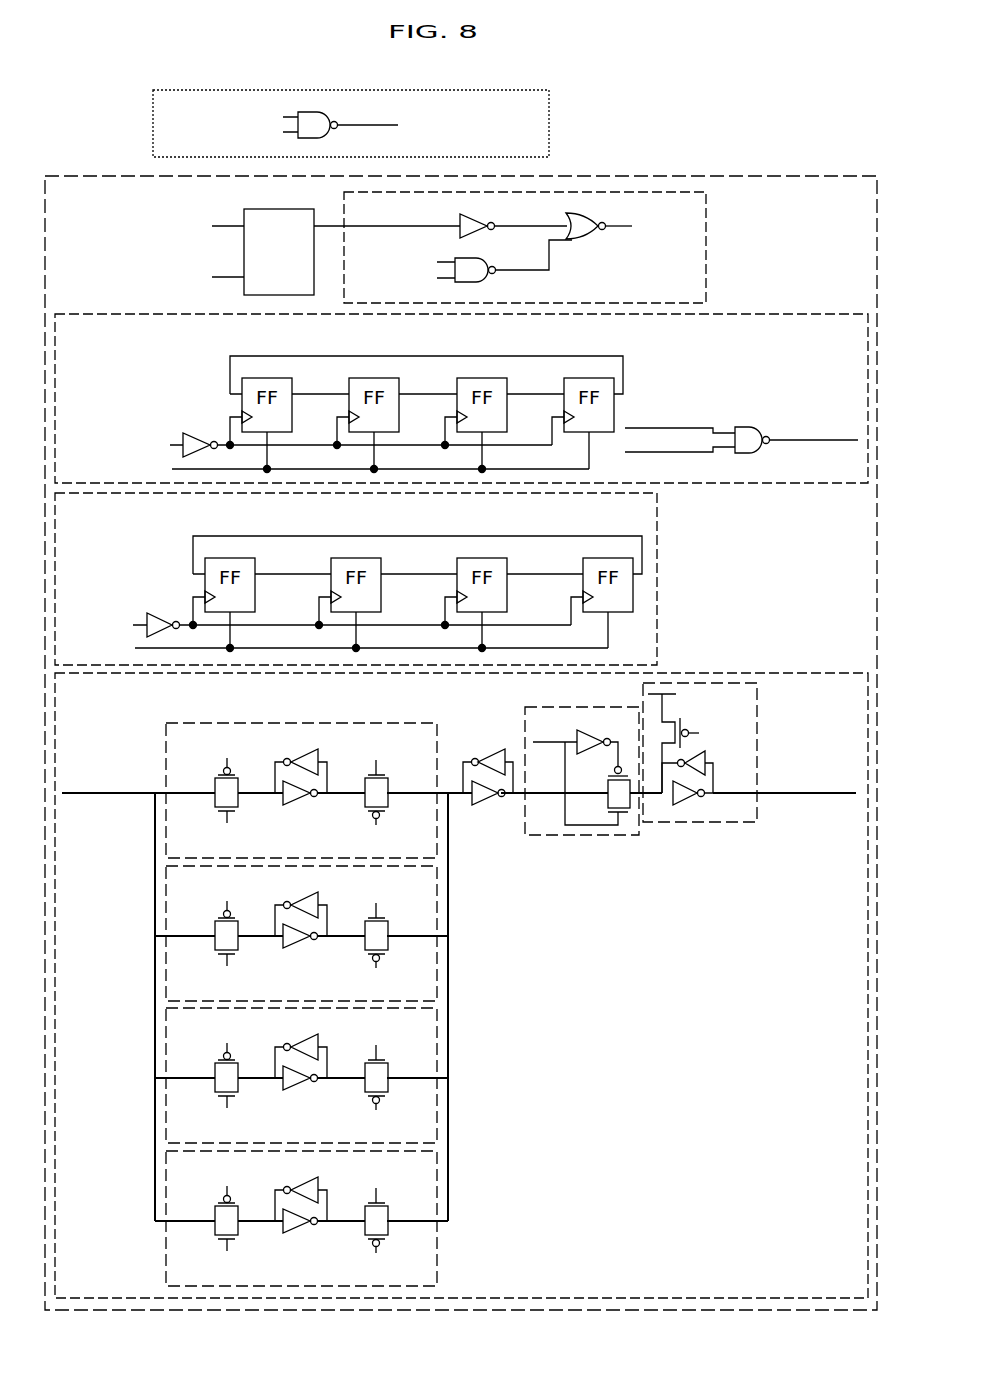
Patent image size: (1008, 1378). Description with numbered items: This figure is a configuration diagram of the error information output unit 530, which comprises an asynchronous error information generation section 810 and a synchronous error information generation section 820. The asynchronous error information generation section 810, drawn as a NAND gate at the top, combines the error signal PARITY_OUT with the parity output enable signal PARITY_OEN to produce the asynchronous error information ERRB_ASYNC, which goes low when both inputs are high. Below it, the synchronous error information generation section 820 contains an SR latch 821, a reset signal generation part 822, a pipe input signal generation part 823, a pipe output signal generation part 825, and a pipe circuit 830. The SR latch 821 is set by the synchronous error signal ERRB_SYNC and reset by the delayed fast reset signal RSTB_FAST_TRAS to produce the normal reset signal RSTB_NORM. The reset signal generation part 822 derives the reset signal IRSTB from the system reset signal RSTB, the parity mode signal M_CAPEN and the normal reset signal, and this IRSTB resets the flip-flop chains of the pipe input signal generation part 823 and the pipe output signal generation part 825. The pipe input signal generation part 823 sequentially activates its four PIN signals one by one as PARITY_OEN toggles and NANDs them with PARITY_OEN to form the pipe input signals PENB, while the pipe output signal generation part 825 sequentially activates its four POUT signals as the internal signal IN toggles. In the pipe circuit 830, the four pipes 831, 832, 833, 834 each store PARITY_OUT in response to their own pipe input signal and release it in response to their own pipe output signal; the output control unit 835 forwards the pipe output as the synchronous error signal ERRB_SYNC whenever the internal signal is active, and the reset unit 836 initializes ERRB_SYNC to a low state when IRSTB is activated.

The error information output unit 530 is at (683, 107).
The asynchronous error information generation section 810 is at (492, 92).
The synchronous error information generation section 820 is at (815, 178).
The SR latch 821 is at (268, 210).
The reset signal generation part 822 is at (708, 220).
The pipe input signal generation part 823 is at (818, 314).
The pipe output signal generation part 825 is at (658, 522).
The pipe circuit 830 is at (818, 673).
The pipe 831 is at (442, 740).
The pipe 832 is at (442, 883).
The pipe 833 is at (442, 1025).
The pipe 834 is at (442, 1168).
The output control unit 835 is at (588, 708).
The reset unit 836 is at (708, 822).